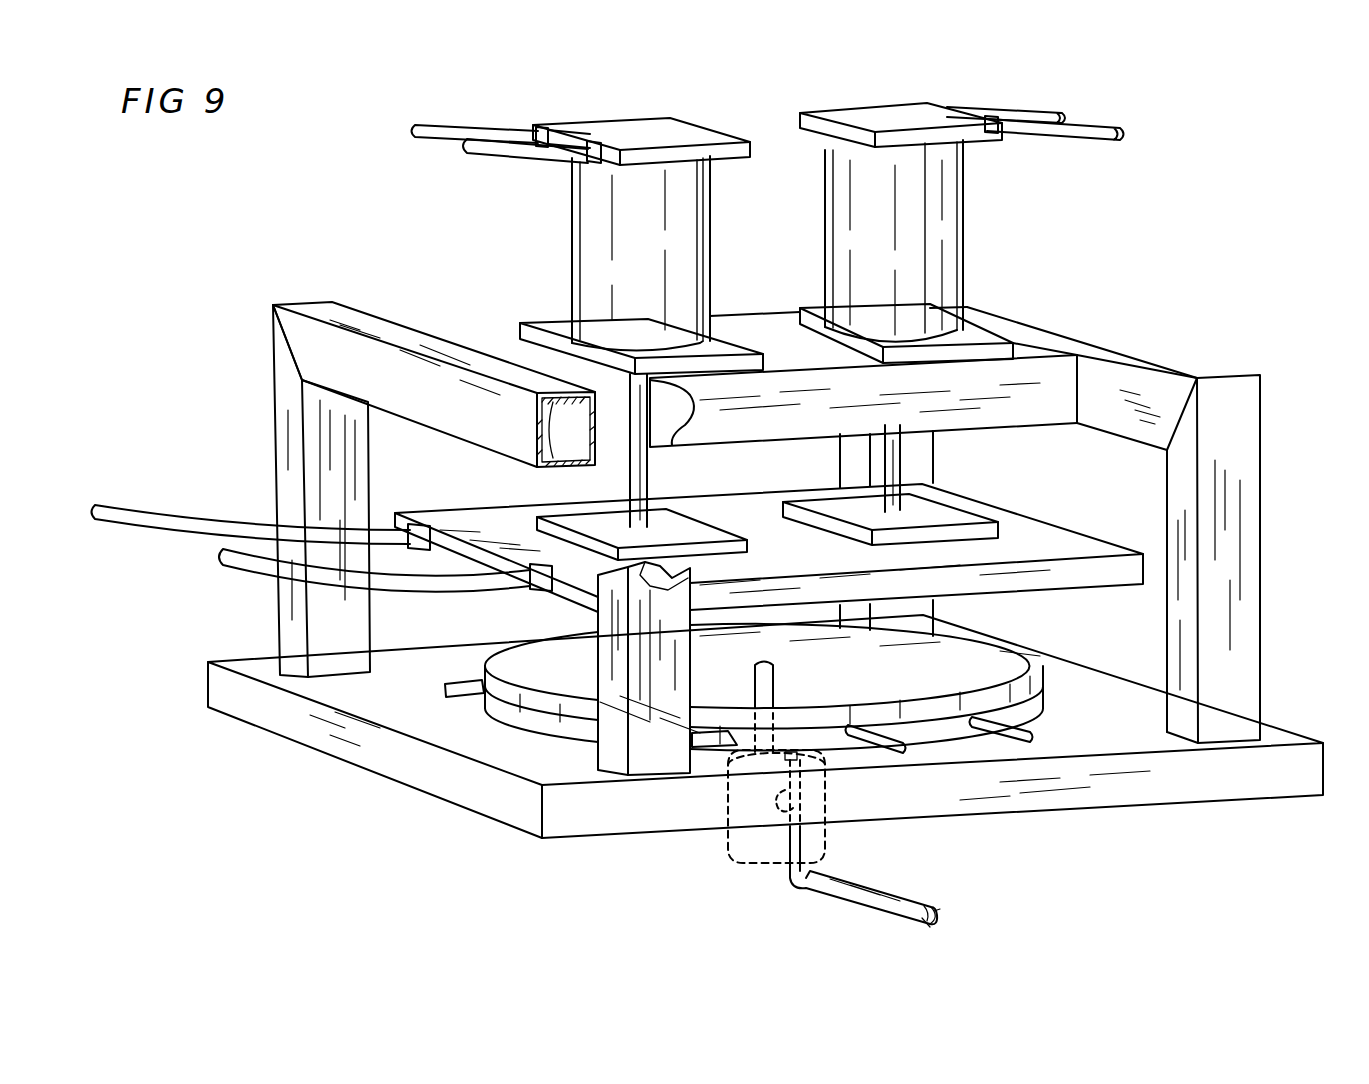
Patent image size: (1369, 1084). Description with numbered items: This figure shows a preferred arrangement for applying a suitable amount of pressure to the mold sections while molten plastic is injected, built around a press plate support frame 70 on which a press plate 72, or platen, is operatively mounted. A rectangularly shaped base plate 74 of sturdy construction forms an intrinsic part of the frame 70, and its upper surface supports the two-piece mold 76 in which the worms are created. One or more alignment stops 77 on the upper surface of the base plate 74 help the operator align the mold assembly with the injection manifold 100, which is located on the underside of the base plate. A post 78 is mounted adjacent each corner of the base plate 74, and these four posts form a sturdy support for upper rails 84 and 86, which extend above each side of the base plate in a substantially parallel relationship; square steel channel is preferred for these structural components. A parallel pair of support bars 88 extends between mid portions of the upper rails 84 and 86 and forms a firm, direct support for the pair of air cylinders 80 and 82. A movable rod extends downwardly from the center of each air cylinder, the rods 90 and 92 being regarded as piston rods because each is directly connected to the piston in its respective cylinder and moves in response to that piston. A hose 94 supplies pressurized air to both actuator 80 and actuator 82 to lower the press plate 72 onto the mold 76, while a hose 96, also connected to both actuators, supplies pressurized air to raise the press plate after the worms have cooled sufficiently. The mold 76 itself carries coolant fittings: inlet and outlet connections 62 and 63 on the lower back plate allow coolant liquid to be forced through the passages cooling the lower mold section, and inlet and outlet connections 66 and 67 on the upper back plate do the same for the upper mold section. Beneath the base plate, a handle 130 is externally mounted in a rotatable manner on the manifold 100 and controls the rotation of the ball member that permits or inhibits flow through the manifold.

The inlet connection 62 is at (905, 751).
The outlet connection 63 is at (1030, 742).
The inlet connection 66 is at (165, 521).
The outlet connection 67 is at (250, 559).
The press plate support frame 70 is at (250, 827).
The press plate 72 is at (1135, 573).
The base plate 74 is at (1300, 792).
The two-piece mold 76 is at (1053, 703).
The alignment stop 77 is at (465, 696).
The post 78 is at (650, 776).
The air cylinder 80 is at (572, 219).
The air cylinder 82 is at (966, 220).
The upper rail 84 is at (357, 305).
The upper rail 86 is at (1215, 378).
The support bar 88 is at (1047, 362).
The rod 90 is at (648, 472).
The rod 92 is at (903, 461).
The hose 94 is at (440, 129).
The hose 96 is at (498, 157).
The injection manifold 100 is at (753, 856).
The handle 130 is at (938, 912).